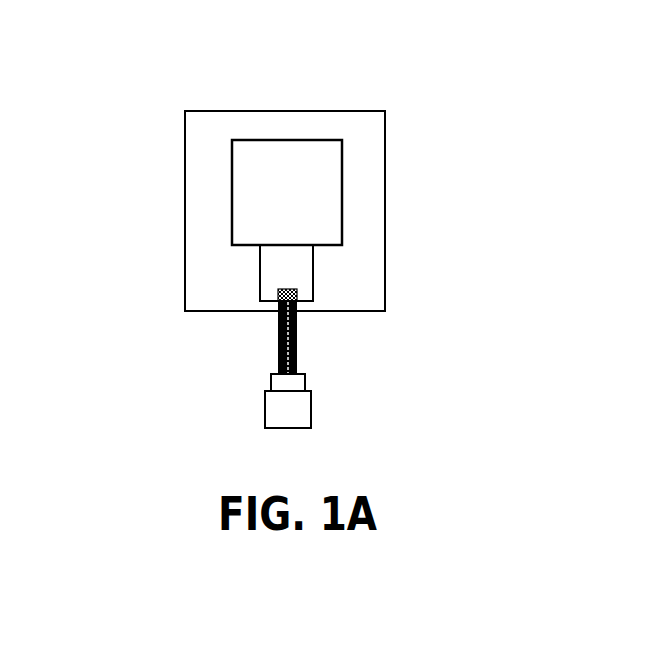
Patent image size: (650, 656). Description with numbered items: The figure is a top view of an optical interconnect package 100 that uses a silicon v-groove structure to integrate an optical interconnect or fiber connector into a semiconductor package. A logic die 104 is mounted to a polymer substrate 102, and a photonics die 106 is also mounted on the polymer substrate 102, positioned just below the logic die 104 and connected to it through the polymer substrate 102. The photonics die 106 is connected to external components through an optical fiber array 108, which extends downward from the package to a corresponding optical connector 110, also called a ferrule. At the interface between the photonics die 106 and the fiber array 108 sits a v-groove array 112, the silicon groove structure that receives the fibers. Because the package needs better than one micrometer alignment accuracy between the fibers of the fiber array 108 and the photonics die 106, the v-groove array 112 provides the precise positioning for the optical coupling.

The optical interconnect package 100 is at (302, 58).
The polymer substrate 102 is at (385, 140).
The logic die 104 is at (232, 167).
The photonics die 106 is at (260, 272).
The optical fiber array 108 is at (277, 358).
The optical connector 110 is at (310, 386).
The v-groove array 112 is at (287, 291).